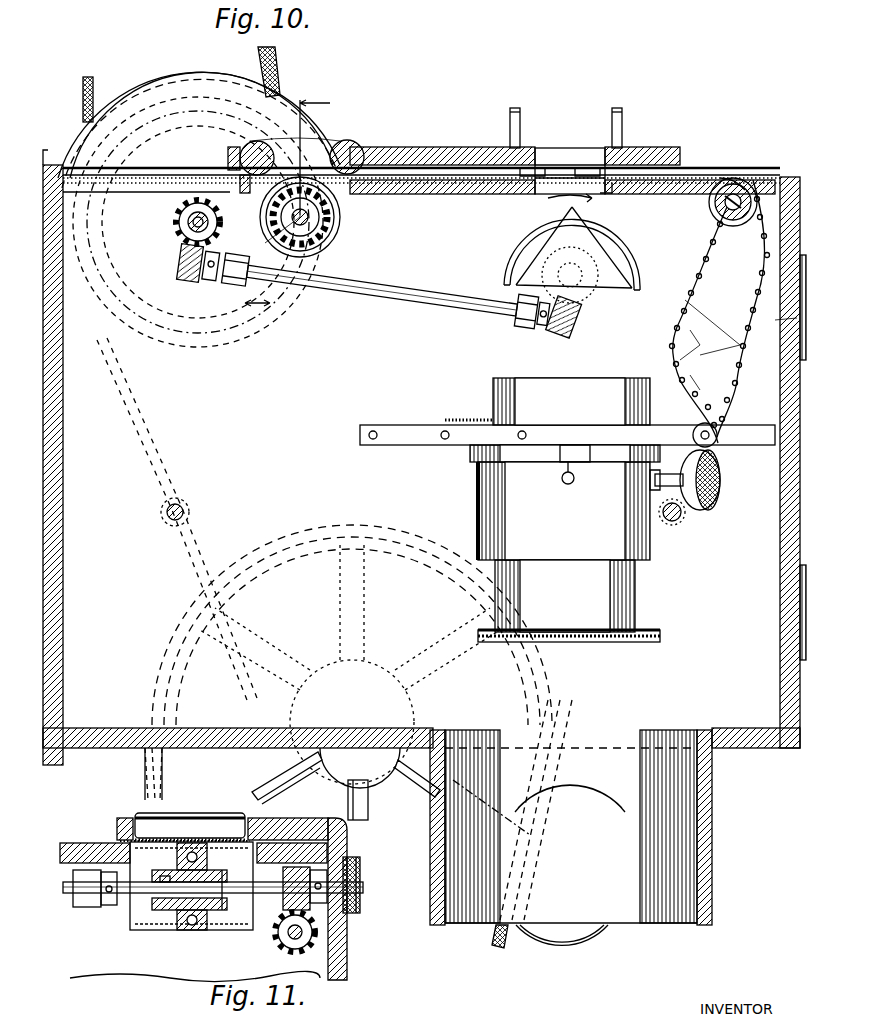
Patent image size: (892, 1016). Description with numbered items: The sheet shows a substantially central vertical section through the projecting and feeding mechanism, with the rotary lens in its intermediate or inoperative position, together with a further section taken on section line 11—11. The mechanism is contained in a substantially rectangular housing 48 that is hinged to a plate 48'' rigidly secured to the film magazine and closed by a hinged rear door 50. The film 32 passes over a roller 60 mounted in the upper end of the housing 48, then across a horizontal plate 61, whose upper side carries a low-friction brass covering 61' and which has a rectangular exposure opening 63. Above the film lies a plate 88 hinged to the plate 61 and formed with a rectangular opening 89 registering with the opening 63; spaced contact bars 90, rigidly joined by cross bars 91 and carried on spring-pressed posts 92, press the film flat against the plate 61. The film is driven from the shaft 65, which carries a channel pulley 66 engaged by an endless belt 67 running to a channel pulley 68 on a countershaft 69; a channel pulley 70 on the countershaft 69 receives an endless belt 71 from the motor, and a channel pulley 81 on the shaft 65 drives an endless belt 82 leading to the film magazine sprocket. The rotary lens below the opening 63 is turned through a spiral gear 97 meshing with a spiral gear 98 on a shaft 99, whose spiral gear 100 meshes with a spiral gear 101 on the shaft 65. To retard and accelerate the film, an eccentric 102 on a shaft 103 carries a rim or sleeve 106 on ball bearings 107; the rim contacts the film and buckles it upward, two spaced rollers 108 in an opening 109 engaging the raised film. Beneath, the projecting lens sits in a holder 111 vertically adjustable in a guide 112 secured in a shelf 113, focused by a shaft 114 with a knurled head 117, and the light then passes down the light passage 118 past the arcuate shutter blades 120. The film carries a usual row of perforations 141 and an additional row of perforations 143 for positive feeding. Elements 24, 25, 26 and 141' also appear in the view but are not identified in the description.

In FIG. 10, the section line 11 is at (287, 205).
In FIG. 10, the disk 24 is at (520, 270).
In FIG. 10, the bracket arms 25 is at (634, 262).
In FIG. 10, the drum housing 26 is at (624, 236).
In FIG. 10, the film 32 is at (228, 156).
In FIG. 11, the film 32 is at (185, 830).
In FIG. 10, the housing 48 is at (720, 692).
In FIG. 10, the plate 48'' is at (424, 457).
In FIG. 10, the hinged rear door 50 is at (797, 320).
In FIG. 10, the roller 60 is at (728, 220).
In FIG. 10, the horizontal plate 61 is at (421, 192).
In FIG. 10, the covering 61' is at (421, 199).
In FIG. 10, the rectangular opening 63 is at (603, 193).
In FIG. 10, the shaft 65 is at (210, 222).
In FIG. 11, the shaft 65 is at (362, 887).
In FIG. 10, the channel pulley 66 is at (168, 84).
In FIG. 10, the endless belt 67 is at (133, 422).
In FIG. 10, the channel pulley 68 is at (390, 808).
In FIG. 10, the countershaft 69 is at (346, 784).
In FIG. 10, the channel pulley 70 is at (145, 766).
In FIG. 10, the endless belt 71 is at (506, 936).
In FIG. 10, the channel pulley 81 is at (180, 124).
In FIG. 10, the endless belt 82 is at (83, 99).
In FIG. 10, the plate 88 is at (645, 148).
In FIG. 11, the plate 88 is at (122, 820).
In FIG. 10, the rectangular opening 89 is at (567, 150).
In FIG. 10, the contact bars 90 is at (582, 165).
In FIG. 10, the cross bars 91 is at (527, 165).
In FIG. 10, the posts 92 is at (515, 115).
In FIG. 10, the spiral gear 97 is at (562, 300).
In FIG. 10, the spiral gear 98 is at (562, 333).
In FIG. 10, the shaft 99 is at (432, 303).
In FIG. 10, the spiral gear 100 is at (185, 285).
In FIG. 11, the spiral gear 100 is at (298, 953).
In FIG. 10, the spiral gear 101 is at (170, 238).
In FIG. 11, the spiral gear 101 is at (330, 905).
In FIG. 10, the eccentric 102 is at (333, 252).
In FIG. 11, the eccentric 102 is at (225, 916).
In FIG. 10, the shaft 103 is at (342, 208).
In FIG. 11, the shaft 103 is at (125, 892).
In FIG. 10, the rim or sleeve 106 is at (345, 222).
In FIG. 11, the rim or sleeve 106 is at (142, 932).
In FIG. 10, the ball bearings 107 is at (343, 236).
In FIG. 11, the ball bearings 107 is at (190, 926).
In FIG. 10, the rollers 108 is at (250, 148).
In FIG. 11, the rollers 108 is at (205, 815).
In FIG. 10, the opening 109 is at (340, 126).
In FIG. 10, the sleeve or holder 111 is at (640, 604).
In FIG. 10, the guide 112 is at (498, 495).
In FIG. 10, the shelf 113 is at (416, 418).
In FIG. 10, the shaft 114 is at (566, 485).
In FIG. 10, the knurled head 117 is at (720, 485).
In FIG. 10, the light passage 118 is at (734, 786).
In FIG. 10, the arcuate blades 120 is at (577, 793).
In FIG. 10, the perforations 141 is at (727, 311).
In FIG. 10, the web edge 141' is at (678, 387).
In FIG. 10, the perforations 143 is at (672, 348).